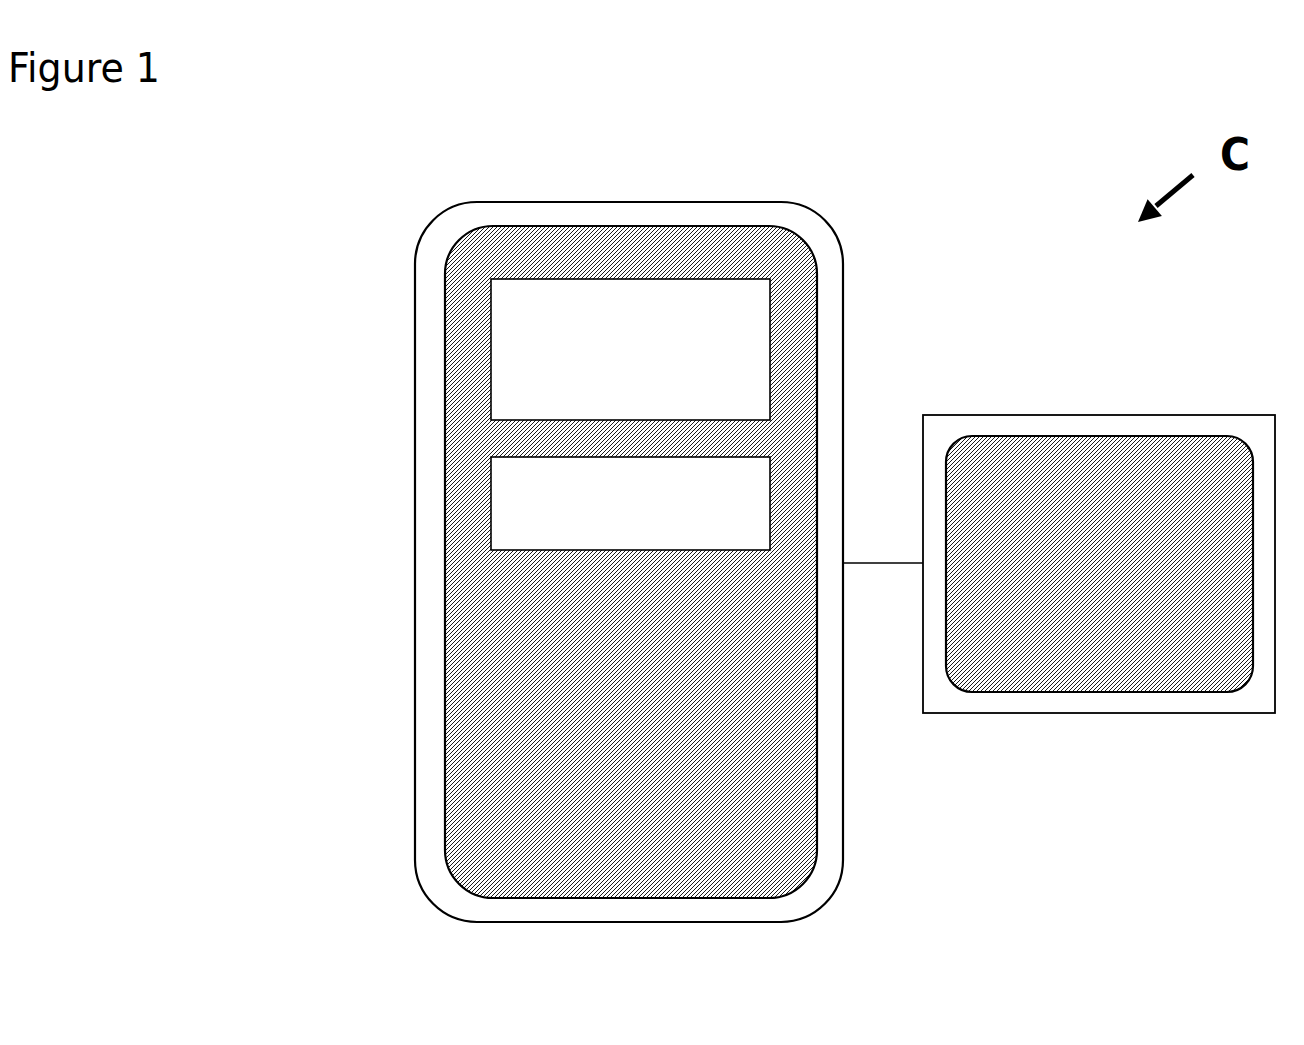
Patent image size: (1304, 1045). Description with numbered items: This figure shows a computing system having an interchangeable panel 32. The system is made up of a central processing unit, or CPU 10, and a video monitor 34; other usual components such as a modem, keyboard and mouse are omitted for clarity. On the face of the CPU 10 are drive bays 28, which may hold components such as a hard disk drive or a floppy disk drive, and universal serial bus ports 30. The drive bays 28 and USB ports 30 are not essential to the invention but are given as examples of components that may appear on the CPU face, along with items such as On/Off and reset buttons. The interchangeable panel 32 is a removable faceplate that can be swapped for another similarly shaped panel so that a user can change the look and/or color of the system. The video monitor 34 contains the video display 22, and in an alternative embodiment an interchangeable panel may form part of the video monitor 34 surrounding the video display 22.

The central processing unit (CPU) 10 is at (629, 536).
The video display 22 is at (1099, 564).
The drive bays 28 is at (630, 349).
The universal serial bus (USB) ports 30 is at (630, 503).
The interchangeable panel 32 is at (460, 376).
The video monitor 34 is at (1099, 607).